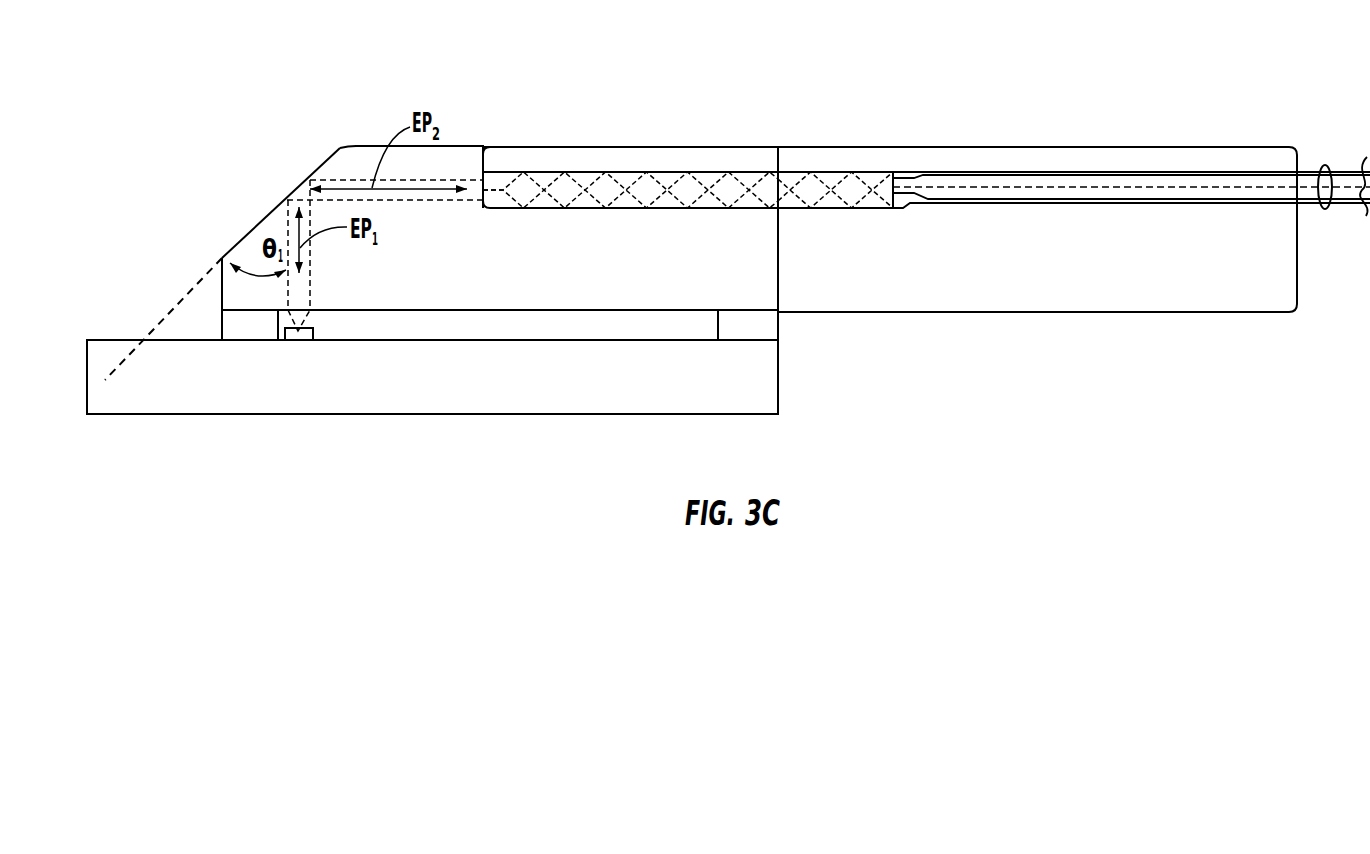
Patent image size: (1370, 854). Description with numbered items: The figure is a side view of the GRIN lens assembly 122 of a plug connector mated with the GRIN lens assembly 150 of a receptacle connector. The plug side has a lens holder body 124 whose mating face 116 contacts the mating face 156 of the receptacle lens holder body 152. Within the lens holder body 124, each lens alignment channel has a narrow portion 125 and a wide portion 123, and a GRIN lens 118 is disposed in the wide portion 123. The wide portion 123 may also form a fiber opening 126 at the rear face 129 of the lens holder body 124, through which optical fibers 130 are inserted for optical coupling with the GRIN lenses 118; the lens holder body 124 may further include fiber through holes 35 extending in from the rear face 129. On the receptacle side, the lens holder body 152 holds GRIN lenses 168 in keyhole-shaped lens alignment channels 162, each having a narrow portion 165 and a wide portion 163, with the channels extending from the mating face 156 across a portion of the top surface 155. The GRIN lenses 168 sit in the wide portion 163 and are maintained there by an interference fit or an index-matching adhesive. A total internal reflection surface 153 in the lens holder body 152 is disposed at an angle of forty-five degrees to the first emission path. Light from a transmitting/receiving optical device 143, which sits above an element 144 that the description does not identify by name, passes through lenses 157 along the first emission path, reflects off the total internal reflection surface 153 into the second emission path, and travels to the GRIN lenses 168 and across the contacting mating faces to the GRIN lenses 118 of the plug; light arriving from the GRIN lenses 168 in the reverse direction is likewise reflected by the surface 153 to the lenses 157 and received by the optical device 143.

The fiber through holes 35 is at (1180, 202).
The mating face 116 is at (780, 265).
The GRIN lenses 118 is at (828, 193).
The GRIN lens assembly 122 is at (1045, 93).
The wide portion 123 is at (883, 208).
The lens holder body 124 is at (1075, 298).
The narrow portion 125 is at (798, 153).
The fiber opening 126 is at (1298, 172).
The rear face 129 is at (1298, 300).
The optical fibers 130 is at (1323, 207).
The transmitting/receiving optical device 143 is at (298, 337).
The base 144 is at (303, 405).
The GRIN lens assembly 150 is at (545, 87).
The lens holder body 152 is at (357, 145).
The total internal reflection surface 153 is at (287, 200).
The top surface 155 is at (455, 146).
The mating face 156 is at (775, 251).
The lenses 157 is at (302, 313).
The lens alignment channels 162 is at (688, 162).
The wide portion 163 is at (578, 208).
The narrow portion 165 is at (532, 158).
The GRIN lenses 168 is at (650, 183).